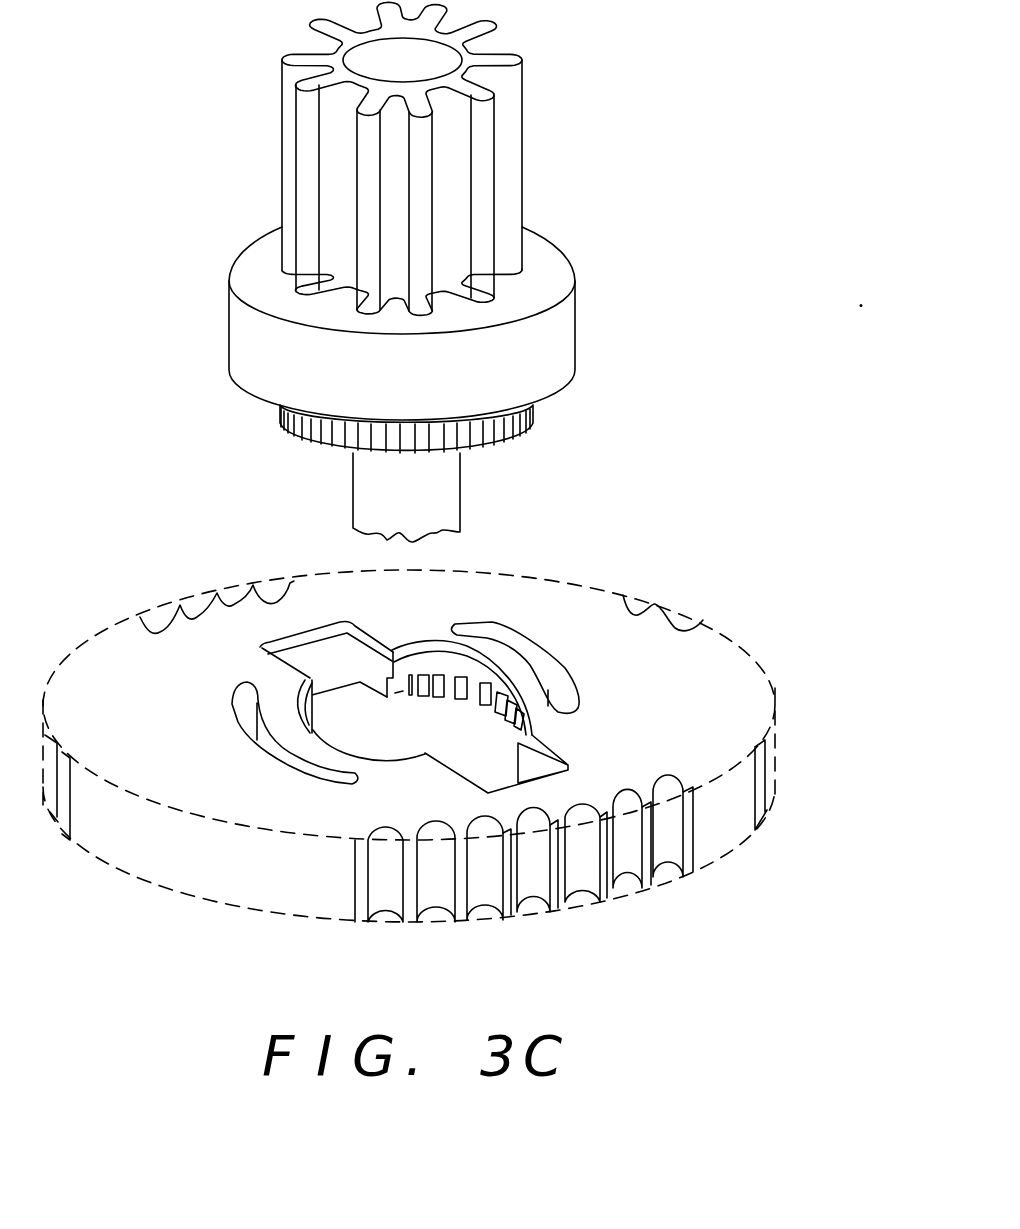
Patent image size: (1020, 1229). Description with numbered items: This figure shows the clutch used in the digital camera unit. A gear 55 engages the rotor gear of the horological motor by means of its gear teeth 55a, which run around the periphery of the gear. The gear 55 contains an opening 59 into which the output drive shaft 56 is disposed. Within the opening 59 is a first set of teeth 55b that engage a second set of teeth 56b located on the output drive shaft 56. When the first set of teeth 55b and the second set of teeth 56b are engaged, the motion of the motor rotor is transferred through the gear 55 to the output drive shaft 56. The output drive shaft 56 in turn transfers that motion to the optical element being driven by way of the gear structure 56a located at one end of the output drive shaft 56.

The gear 55 is at (722, 677).
The gear teeth 55a is at (657, 857).
The first set of teeth 55b is at (520, 697).
The output drive shaft 56 is at (578, 337).
The gear structure 56a is at (520, 143).
The second set of teeth 56b is at (483, 450).
The opening 59 is at (327, 657).